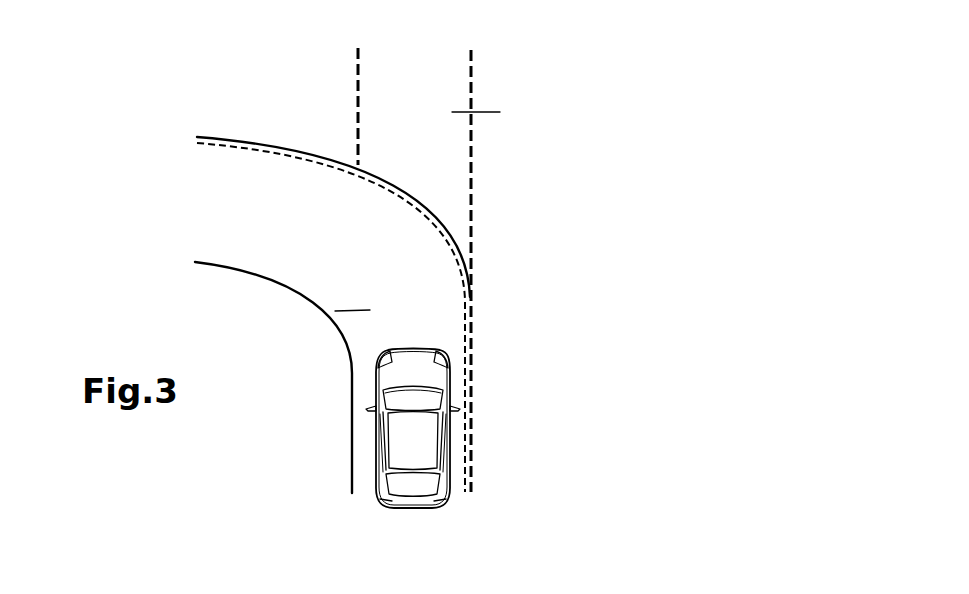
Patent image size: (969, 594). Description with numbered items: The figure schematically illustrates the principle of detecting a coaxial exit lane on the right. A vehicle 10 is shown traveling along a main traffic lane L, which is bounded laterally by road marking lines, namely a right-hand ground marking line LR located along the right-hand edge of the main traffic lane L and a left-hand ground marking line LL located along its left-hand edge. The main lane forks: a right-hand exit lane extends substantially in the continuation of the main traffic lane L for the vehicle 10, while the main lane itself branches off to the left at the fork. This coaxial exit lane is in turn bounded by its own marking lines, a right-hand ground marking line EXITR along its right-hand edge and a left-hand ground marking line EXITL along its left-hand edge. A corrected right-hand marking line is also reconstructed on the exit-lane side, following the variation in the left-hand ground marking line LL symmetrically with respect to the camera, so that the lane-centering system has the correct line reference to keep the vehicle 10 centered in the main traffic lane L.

The vehicle 10 is at (423, 447).
The main traffic lane L is at (335, 311).
The left-hand ground marking line LL is at (352, 432).
The right-hand ground marking line LR is at (472, 393).
The left-hand ground marking line of the exit lane EXITL is at (358, 77).
The right-hand ground marking line of the exit lane EXITR is at (472, 155).